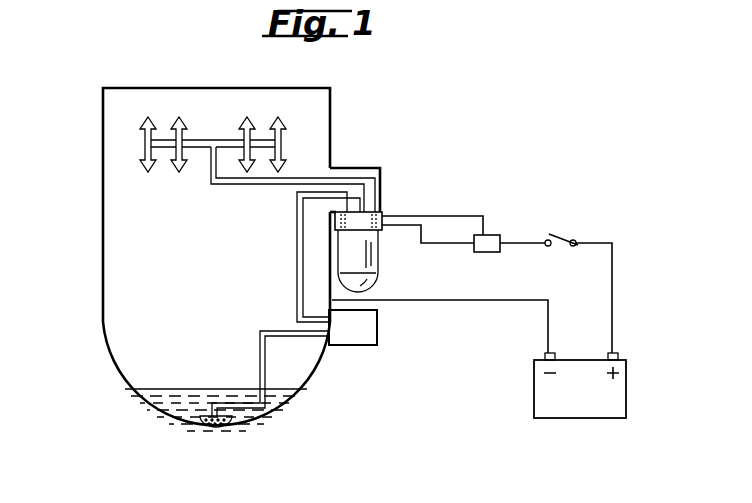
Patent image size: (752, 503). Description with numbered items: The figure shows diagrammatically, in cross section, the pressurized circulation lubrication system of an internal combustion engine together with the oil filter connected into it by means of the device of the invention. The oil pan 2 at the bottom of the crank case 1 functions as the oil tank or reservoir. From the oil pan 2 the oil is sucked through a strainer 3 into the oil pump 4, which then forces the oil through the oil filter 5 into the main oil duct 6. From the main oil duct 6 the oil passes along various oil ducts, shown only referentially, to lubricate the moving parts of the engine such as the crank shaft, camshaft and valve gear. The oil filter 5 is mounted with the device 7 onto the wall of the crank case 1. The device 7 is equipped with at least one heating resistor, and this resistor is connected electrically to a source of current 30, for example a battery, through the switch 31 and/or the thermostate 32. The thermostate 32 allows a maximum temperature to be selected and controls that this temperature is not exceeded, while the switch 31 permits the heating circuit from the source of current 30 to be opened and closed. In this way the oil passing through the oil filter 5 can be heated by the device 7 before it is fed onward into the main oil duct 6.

The crank case 1 is at (102, 255).
The oil pan 2 is at (143, 412).
The strainer 3 is at (214, 429).
The oil pump 4 is at (355, 332).
The oil filter 5 is at (358, 255).
The main oil duct 6 is at (247, 188).
The device 7 is at (360, 221).
The source of current 30 is at (582, 392).
The switch 31 is at (565, 237).
The thermostate 32 is at (490, 240).